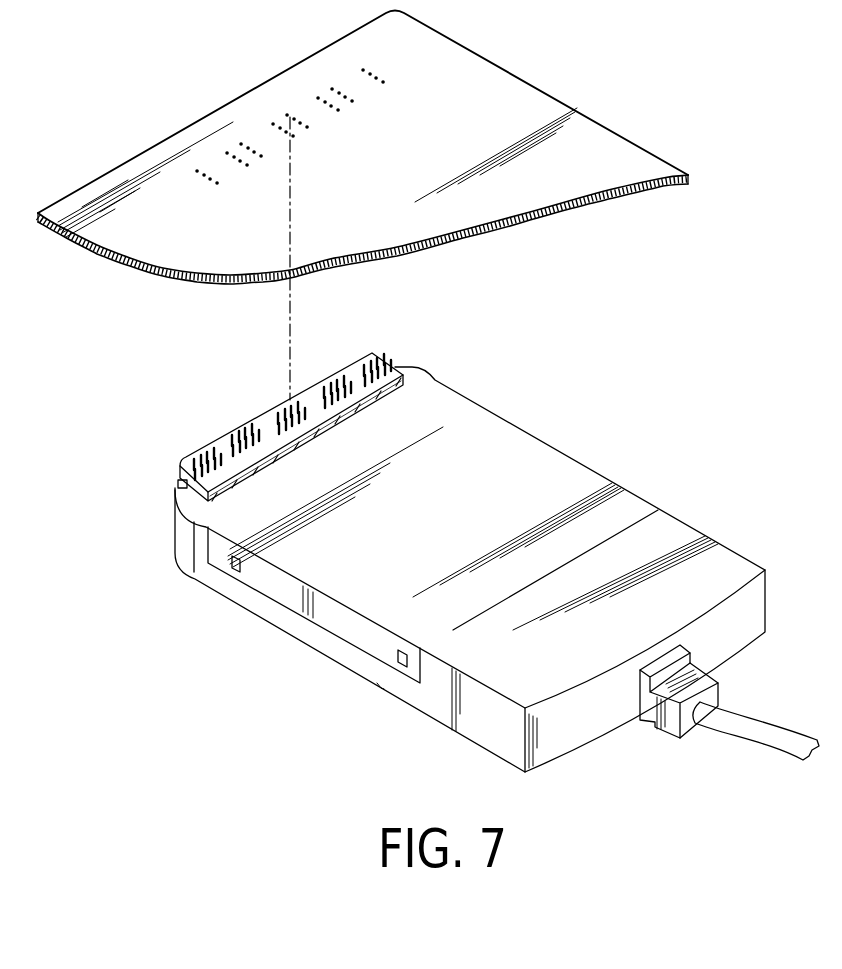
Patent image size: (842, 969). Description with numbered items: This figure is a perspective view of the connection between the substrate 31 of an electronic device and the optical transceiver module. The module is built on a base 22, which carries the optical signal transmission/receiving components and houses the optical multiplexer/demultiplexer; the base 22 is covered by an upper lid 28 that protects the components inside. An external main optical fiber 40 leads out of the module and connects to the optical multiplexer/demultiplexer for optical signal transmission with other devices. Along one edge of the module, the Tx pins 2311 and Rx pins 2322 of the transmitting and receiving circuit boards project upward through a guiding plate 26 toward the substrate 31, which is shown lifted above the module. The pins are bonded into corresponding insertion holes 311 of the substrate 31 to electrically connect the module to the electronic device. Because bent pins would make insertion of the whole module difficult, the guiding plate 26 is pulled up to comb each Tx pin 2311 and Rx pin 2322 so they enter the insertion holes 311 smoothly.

The substrate 31 is at (517, 110).
The insertion holes 311 is at (290, 118).
The base 22 is at (495, 737).
The upper lid 28 is at (578, 492).
The guiding plate 26 is at (177, 464).
The Tx pin 2311 is at (198, 455).
The Rx pin 2322 is at (220, 440).
The external main optical fiber 40 is at (763, 737).